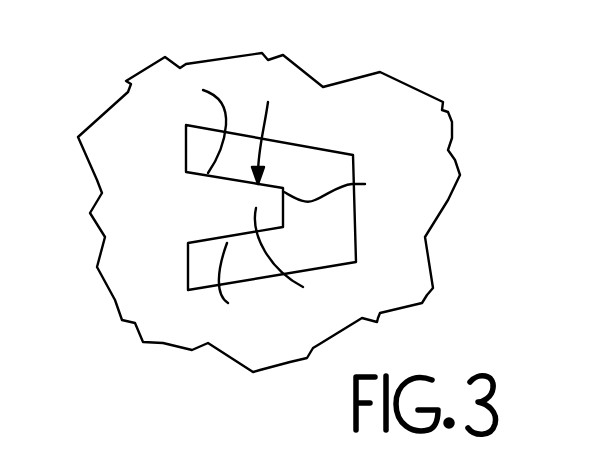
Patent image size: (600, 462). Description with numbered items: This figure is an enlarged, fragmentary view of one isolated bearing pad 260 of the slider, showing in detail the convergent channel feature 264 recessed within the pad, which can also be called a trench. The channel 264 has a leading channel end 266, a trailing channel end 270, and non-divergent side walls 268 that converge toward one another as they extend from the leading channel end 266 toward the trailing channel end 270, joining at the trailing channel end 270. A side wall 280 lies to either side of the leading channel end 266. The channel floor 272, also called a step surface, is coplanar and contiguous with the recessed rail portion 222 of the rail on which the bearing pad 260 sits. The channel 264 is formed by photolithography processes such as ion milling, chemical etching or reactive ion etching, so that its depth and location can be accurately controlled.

The recessed rail portion 222 is at (130, 295).
The isolated bearing pad 260 is at (311, 150).
The convergent channel feature 264 is at (261, 125).
The leading channel end 266 is at (200, 207).
The non-divergent side walls 268 is at (216, 202).
The trailing channel end 270 is at (350, 186).
The channel floor 272 is at (302, 256).
The side wall 280 is at (186, 142).